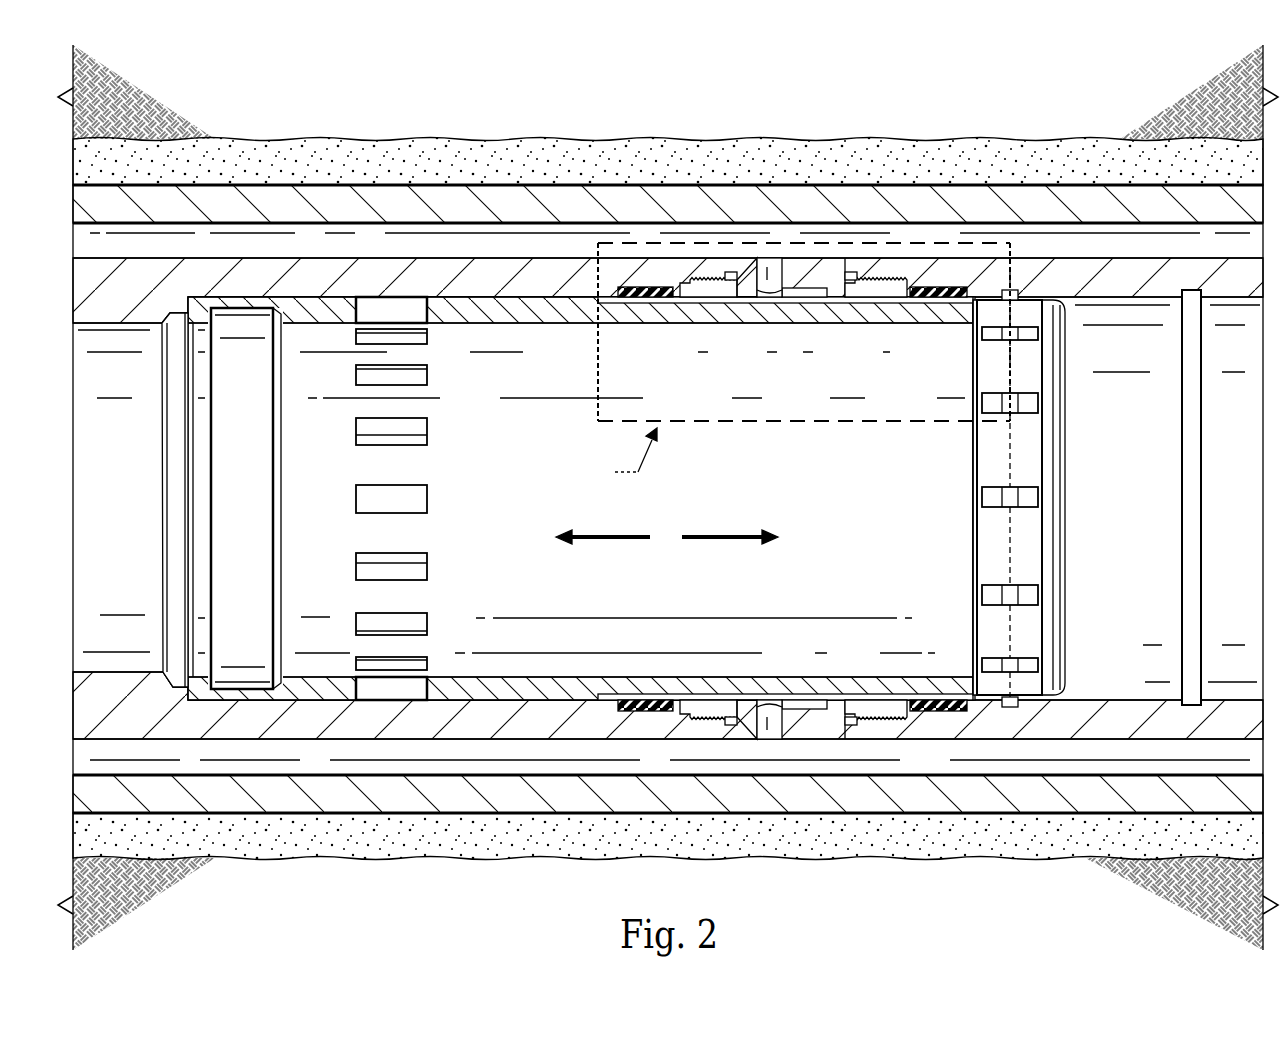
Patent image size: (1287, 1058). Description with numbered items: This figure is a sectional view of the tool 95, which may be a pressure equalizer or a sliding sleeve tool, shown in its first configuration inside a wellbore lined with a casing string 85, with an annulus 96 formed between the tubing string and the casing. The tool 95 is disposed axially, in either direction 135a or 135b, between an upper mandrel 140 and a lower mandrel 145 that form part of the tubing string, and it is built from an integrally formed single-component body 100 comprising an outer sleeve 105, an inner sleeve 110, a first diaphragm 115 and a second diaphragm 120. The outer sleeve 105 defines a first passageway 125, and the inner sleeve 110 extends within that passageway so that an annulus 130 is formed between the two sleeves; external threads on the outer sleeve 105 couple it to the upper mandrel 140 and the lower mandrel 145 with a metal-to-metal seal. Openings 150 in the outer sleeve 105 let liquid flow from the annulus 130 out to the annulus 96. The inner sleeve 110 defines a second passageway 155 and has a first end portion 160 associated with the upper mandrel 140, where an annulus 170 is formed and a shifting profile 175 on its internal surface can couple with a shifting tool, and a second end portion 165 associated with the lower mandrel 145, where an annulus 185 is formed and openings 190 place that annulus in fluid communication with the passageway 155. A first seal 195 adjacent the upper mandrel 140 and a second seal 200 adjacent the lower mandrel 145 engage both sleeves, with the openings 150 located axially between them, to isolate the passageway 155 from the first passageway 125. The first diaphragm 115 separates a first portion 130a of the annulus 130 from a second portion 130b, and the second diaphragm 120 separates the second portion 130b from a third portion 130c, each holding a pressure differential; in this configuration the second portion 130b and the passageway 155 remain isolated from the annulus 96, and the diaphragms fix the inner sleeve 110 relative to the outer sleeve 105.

The casing string 85 is at (154, 197).
The annulus 96 is at (314, 240).
The lower mandrel 145 is at (375, 267).
The upper mandrel 140 is at (1128, 267).
The second end portion 165 is at (201, 286).
The annulus 185 is at (498, 297).
The inner sleeve 110 is at (545, 320).
The openings 190 is at (412, 505).
The second passageway 155 is at (767, 482).
The first passageway 125 is at (800, 303).
The second seal 200 is at (645, 305).
The second diaphragm 120 is at (771, 498).
The third portion of the annulus 130c is at (705, 305).
The annulus 130 is at (743, 312).
The second portion of the annulus 130b is at (845, 305).
The openings 150 is at (770, 267).
The first diaphragm 115 is at (896, 248).
The first portion of the annulus 130a is at (905, 305).
The outer sleeve 105 is at (850, 712).
The body 100 is at (706, 412).
The first seal 195 is at (940, 302).
The first end portion 160 is at (1043, 273).
The annulus 170 is at (992, 700).
The shifting profile 175 is at (1020, 668).
The axial direction 135b is at (612, 541).
The axial direction 135a is at (722, 541).
The tool 95 is at (947, 232).